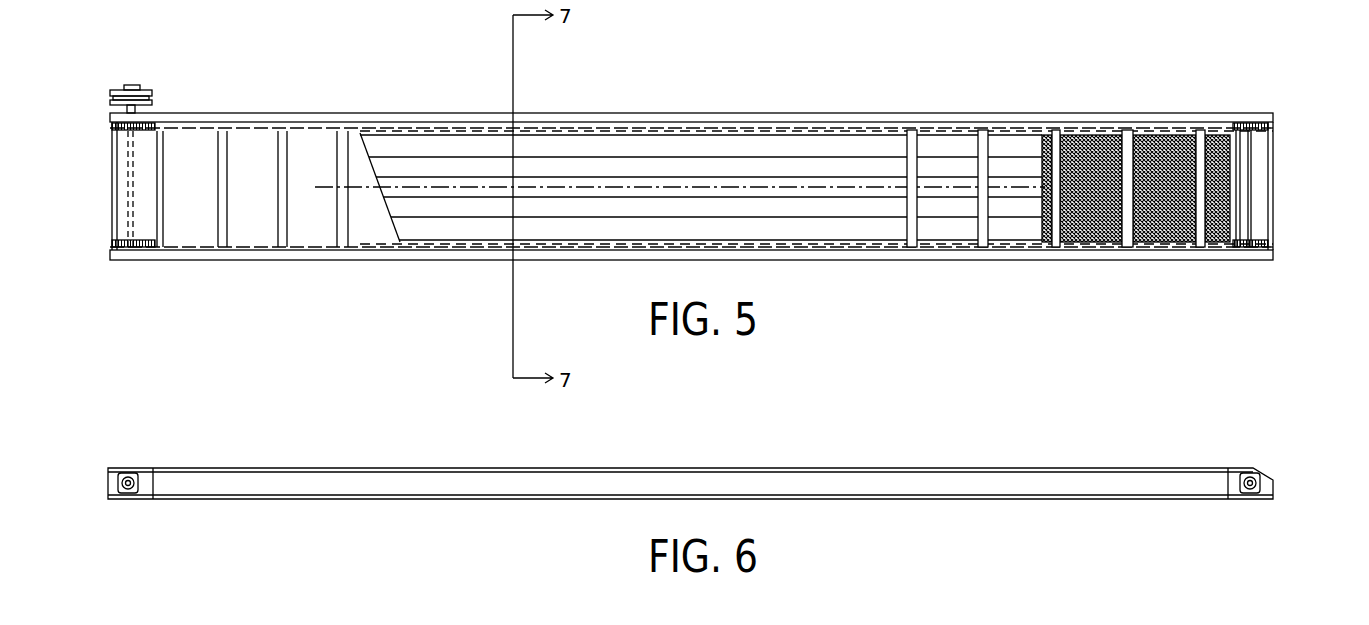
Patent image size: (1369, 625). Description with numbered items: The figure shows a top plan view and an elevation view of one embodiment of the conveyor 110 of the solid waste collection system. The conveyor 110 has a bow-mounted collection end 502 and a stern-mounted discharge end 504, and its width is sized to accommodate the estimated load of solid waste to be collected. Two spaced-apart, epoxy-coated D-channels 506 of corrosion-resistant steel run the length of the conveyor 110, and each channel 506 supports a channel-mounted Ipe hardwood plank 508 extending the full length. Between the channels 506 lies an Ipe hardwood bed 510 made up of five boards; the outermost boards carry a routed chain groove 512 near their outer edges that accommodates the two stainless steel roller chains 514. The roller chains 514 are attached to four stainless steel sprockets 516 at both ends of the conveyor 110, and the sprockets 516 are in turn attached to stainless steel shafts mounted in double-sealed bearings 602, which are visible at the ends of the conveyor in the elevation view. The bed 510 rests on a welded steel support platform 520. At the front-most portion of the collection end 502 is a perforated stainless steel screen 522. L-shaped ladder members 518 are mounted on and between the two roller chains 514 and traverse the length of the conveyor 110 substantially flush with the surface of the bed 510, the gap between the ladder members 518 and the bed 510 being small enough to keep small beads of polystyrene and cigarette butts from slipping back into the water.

In FIG. 5, the conveyor 110 is at (990, 86).
In FIG. 5, the collection end 502 is at (1292, 208).
In FIG. 5, the discharge end 504 is at (98, 180).
In FIG. 5, the D-channels 506 is at (795, 122).
In FIG. 6, the D-channels 506 is at (1010, 468).
In FIG. 5, the hardwood planks 508 is at (578, 114).
In FIG. 6, the hardwood planks 508 is at (1102, 482).
In FIG. 5, the hardwood bed 510 is at (410, 146).
In FIG. 5, the chain groove 512 is at (428, 128).
In FIG. 5, the roller chains 514 is at (198, 130).
In FIG. 5, the sprockets 516 is at (112, 129).
In FIG. 5, the ladder members 518 is at (912, 232).
In FIG. 5, the support platform 520 is at (310, 220).
In FIG. 5, the screen 522 is at (1235, 222).
In FIG. 6, the bearings 602 is at (128, 495).